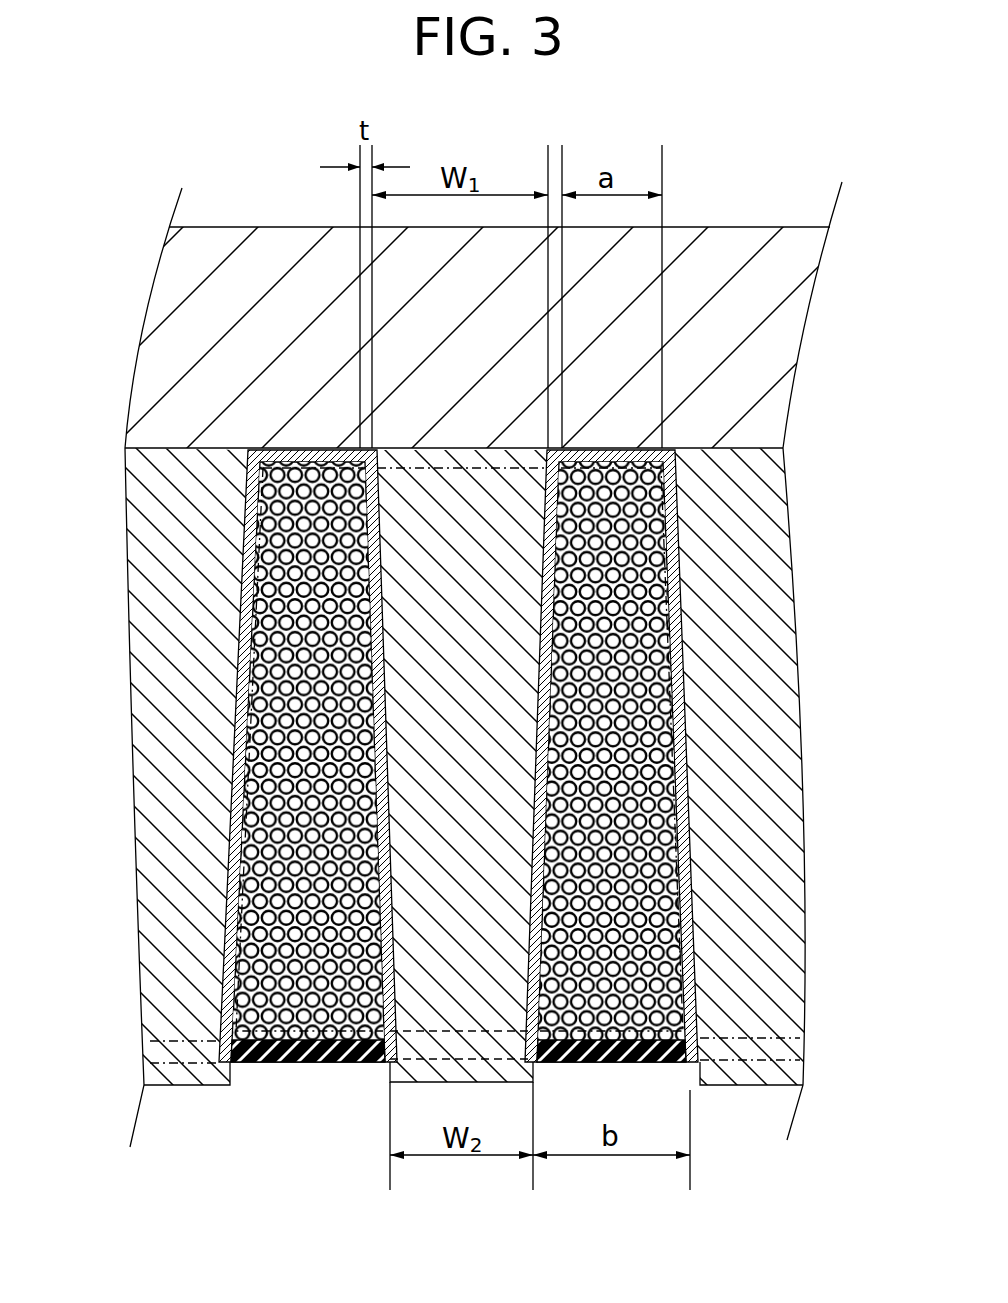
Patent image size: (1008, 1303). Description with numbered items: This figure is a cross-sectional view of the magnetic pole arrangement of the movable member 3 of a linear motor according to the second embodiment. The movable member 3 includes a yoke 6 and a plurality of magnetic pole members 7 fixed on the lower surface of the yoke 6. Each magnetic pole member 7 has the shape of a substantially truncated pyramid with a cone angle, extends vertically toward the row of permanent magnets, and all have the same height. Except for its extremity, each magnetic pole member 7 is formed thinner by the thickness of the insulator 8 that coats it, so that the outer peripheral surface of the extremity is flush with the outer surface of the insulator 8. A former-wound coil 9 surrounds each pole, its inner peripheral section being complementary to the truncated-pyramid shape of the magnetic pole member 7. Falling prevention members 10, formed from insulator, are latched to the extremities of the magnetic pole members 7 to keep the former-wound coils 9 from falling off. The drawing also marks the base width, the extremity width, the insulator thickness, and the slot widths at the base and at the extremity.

The movable member 3 is at (725, 214).
The yoke 6 is at (287, 255).
The magnetic pole member 7 is at (513, 650).
The insulator 8 is at (238, 714).
The former-wound coil 9 is at (247, 472).
The falling prevention member 10 is at (302, 1063).